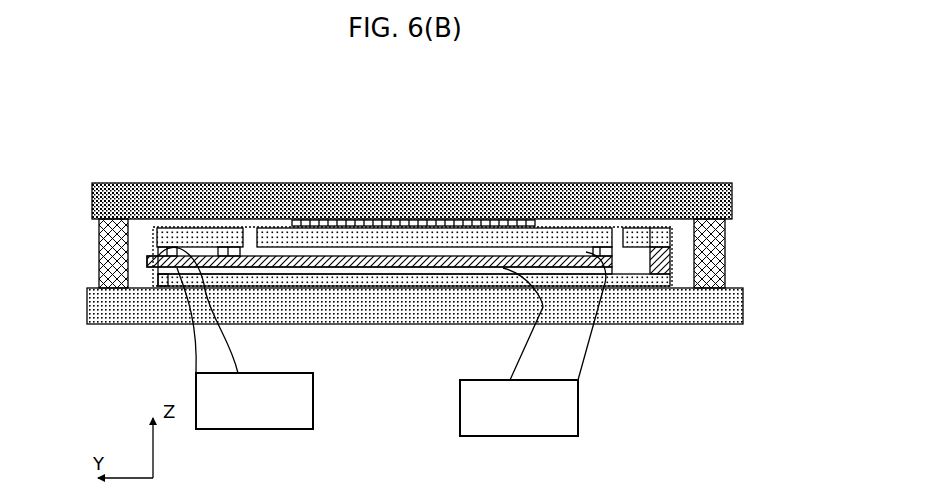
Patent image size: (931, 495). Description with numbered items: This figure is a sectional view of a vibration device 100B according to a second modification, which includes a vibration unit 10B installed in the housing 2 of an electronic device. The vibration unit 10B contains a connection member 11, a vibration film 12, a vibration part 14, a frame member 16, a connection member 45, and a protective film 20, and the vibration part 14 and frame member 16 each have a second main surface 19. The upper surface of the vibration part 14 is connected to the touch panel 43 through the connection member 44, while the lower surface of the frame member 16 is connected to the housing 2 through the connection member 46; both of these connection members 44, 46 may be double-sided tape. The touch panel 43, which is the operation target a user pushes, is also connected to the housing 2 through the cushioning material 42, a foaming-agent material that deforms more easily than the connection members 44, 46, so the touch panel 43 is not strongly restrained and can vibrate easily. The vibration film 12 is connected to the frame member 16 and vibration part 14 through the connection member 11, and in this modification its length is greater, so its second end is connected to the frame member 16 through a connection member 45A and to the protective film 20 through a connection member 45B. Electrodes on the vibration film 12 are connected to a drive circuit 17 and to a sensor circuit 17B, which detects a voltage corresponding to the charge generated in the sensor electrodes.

The vibration device 100B is at (206, 109).
The housing 2 is at (744, 294).
The vibration unit 10B is at (462, 287).
The connection member 11 is at (231, 257).
The vibration film 12 is at (292, 270).
The vibration part 14 is at (340, 262).
The frame member 16 is at (645, 280).
The drive circuit 17 is at (575, 437).
The sensor circuit 17B is at (313, 430).
The second main surface 19 is at (599, 223).
The protective film 20 is at (386, 278).
The cushioning material 42 is at (98, 244).
The touch panel 43 is at (339, 183).
The connection member 44 is at (428, 220).
The connection member 45 is at (634, 272).
The connection member 45A is at (157, 252).
The connection member 45B is at (157, 275).
The connection member 46 is at (163, 288).